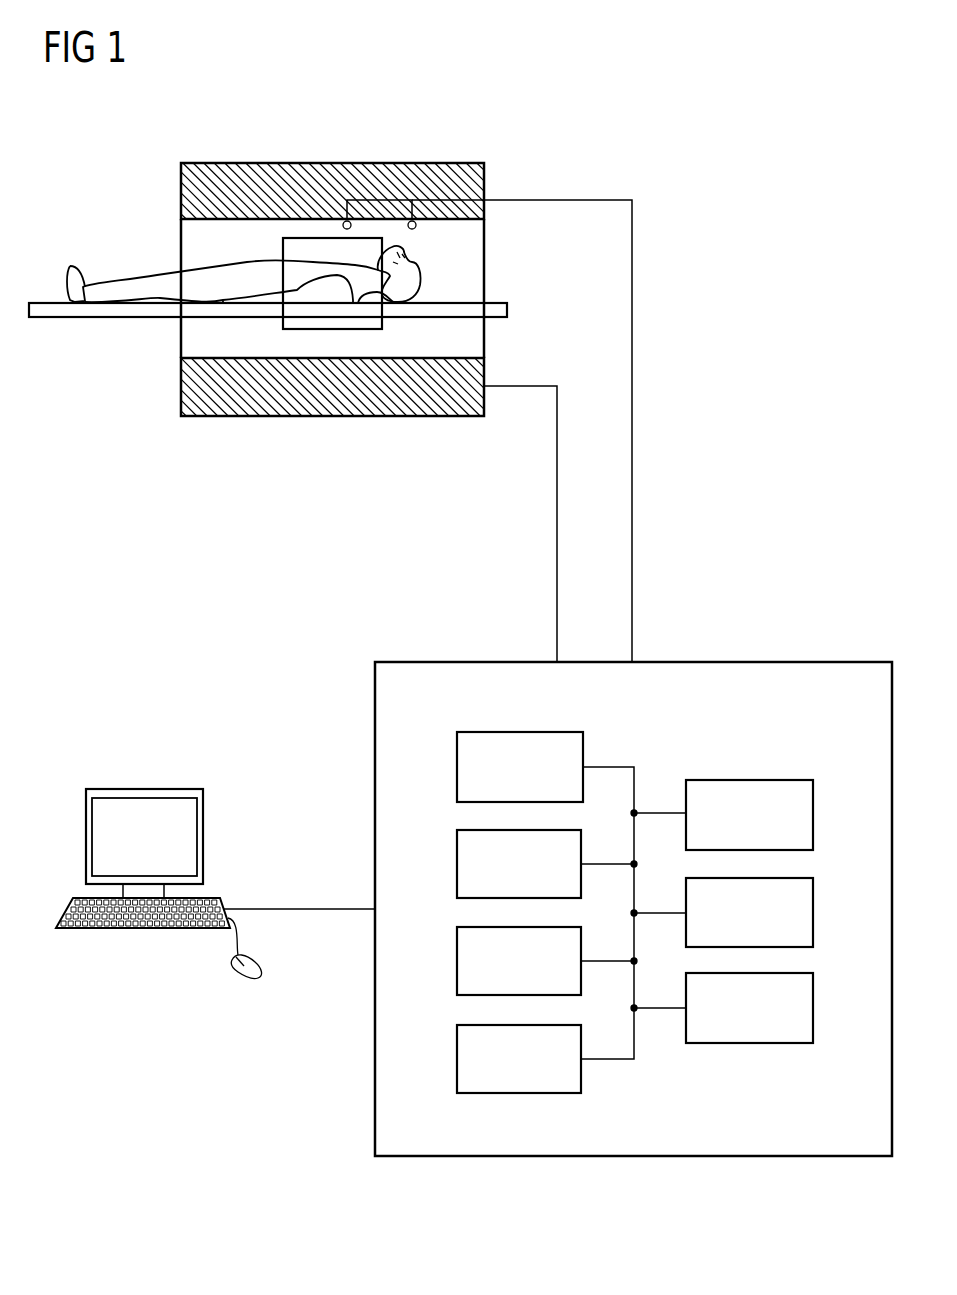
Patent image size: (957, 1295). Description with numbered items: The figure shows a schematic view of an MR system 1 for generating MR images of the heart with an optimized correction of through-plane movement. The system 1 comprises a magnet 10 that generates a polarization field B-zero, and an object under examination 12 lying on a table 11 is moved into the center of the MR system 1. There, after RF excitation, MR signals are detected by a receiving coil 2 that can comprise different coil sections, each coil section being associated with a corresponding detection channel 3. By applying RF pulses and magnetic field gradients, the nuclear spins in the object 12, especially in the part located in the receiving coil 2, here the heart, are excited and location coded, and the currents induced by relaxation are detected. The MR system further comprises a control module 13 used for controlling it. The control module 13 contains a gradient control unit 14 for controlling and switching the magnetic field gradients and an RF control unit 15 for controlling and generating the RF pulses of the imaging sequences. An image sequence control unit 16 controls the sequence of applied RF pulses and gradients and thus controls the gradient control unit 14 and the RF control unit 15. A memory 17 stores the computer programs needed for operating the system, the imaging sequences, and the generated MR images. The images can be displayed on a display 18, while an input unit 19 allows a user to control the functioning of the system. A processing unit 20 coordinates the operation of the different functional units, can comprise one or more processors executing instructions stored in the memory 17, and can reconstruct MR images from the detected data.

The MR system 1 is at (545, 122).
The receiving coil 2 is at (283, 239).
The detection channel 3 is at (342, 220).
The magnet 10 is at (352, 163).
The table 11 is at (38, 301).
The object under examination 12 is at (70, 264).
The control module 13 is at (712, 662).
The gradient control unit 14 is at (457, 768).
The RF control unit 15 is at (457, 865).
The image sequence control unit 16 is at (813, 814).
The memory 17 is at (457, 962).
The display 18 is at (813, 912).
The input unit 19 is at (813, 1009).
The processing unit 20 is at (457, 1060).